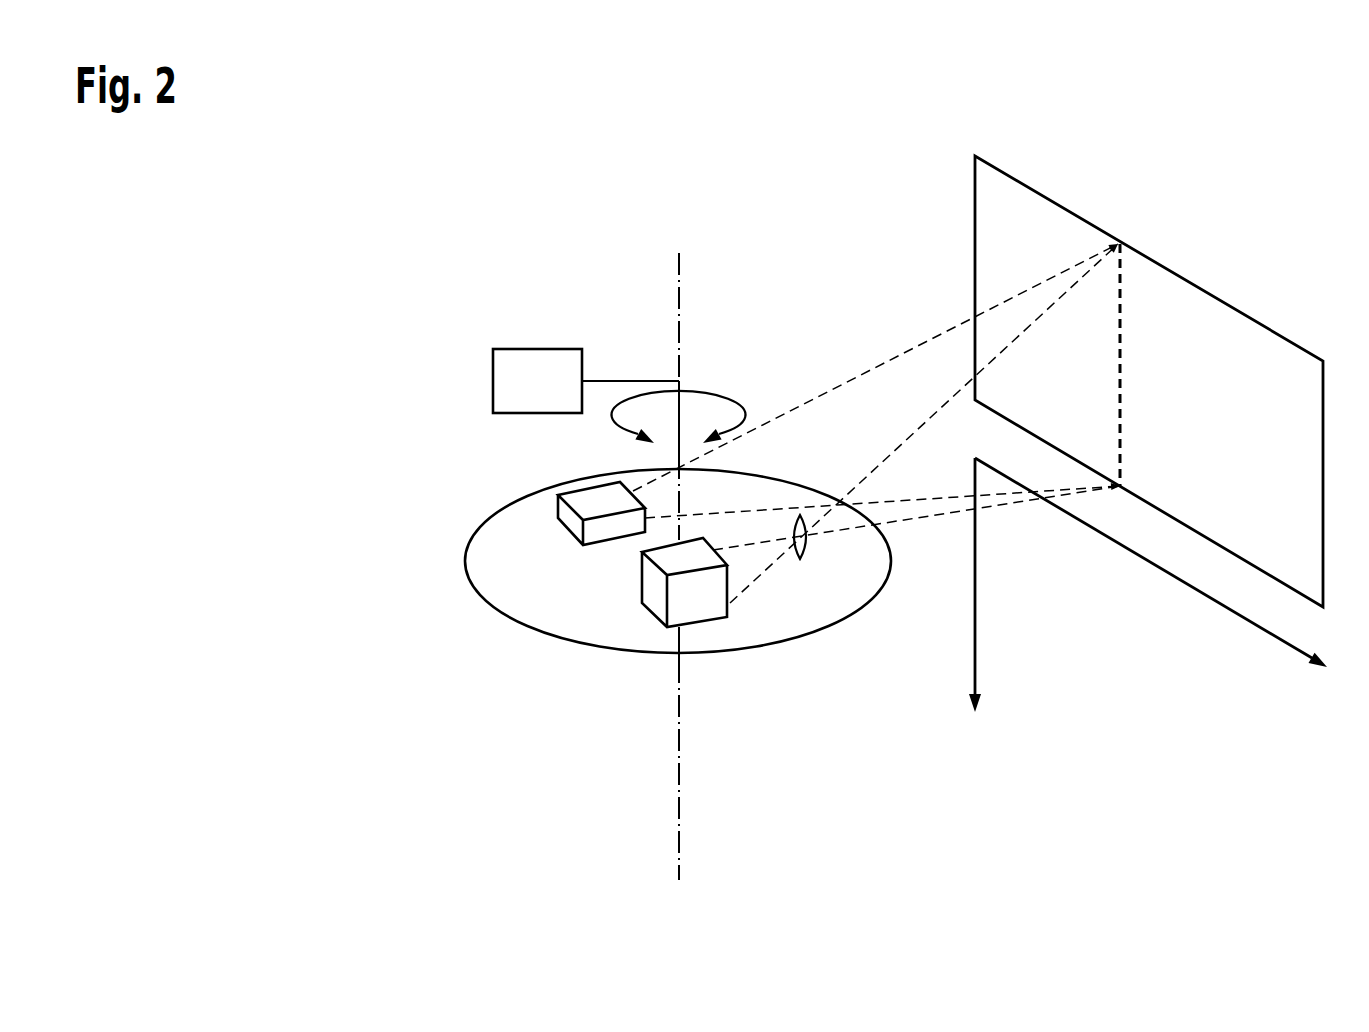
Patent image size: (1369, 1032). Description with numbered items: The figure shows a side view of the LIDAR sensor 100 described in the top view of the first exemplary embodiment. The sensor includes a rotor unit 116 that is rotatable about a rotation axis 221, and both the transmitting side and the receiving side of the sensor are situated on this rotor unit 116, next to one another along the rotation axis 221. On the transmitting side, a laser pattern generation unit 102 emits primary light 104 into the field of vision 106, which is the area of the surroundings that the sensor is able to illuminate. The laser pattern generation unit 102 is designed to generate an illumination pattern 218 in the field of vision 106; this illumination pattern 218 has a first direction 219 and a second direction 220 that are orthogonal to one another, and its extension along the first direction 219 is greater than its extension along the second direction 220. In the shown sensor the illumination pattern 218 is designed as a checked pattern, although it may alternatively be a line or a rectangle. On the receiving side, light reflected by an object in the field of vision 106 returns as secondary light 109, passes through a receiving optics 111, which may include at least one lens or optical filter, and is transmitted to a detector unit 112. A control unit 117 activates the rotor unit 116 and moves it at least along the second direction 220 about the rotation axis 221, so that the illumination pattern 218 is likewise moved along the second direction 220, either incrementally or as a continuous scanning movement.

The LIDAR sensor 100 is at (312, 273).
The laser pattern generation unit 102 is at (562, 512).
The primary light 104 is at (930, 338).
The field of vision 106 is at (1297, 361).
The secondary light 109 is at (923, 520).
The receiving optics 111 is at (797, 552).
The detector unit 112 is at (657, 607).
The rotor unit 116 is at (495, 588).
The control unit 117 is at (493, 377).
The illumination pattern 218 is at (1122, 268).
The first direction 219 is at (975, 674).
The second direction 220 is at (1233, 613).
The rotation axis 221 is at (679, 305).